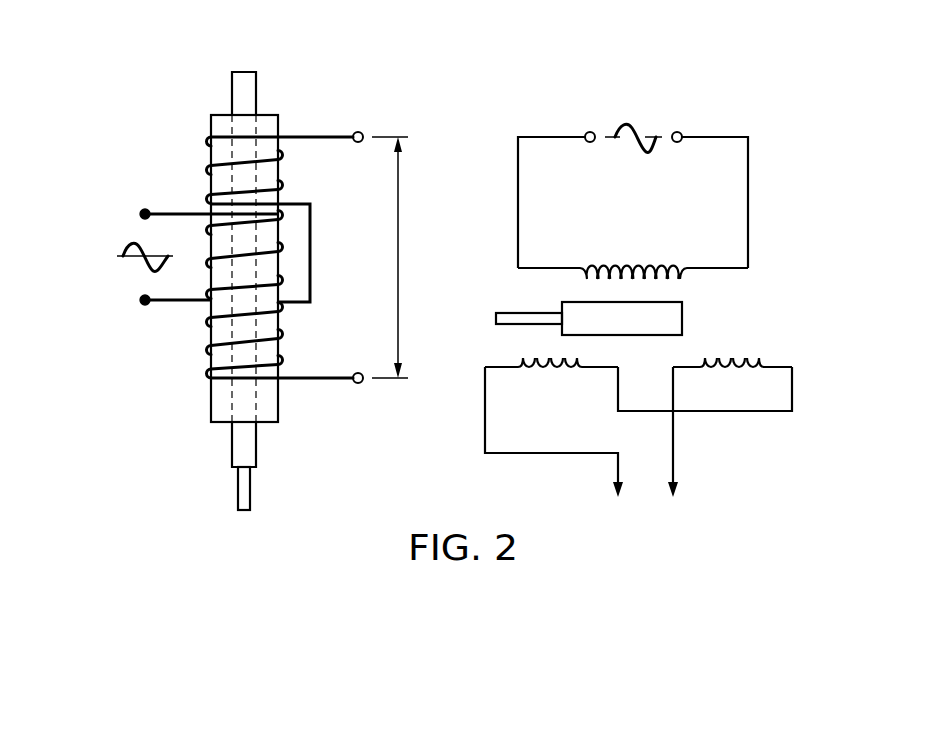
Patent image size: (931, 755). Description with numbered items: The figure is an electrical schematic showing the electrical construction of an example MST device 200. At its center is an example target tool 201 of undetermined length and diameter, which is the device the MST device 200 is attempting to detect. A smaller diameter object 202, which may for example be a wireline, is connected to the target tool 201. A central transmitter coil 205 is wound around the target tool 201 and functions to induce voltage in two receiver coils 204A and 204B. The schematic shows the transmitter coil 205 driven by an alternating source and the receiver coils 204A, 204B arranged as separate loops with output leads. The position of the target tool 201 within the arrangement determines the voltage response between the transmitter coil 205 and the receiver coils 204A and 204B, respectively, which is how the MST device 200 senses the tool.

The MST device 200 is at (173, 63).
The target tool 201 is at (232, 447).
The smaller diameter object 202 is at (238, 487).
The receiver coil 204A is at (553, 382).
The receiver coil 204B is at (733, 382).
The central transmitter coil 205 is at (123, 280).